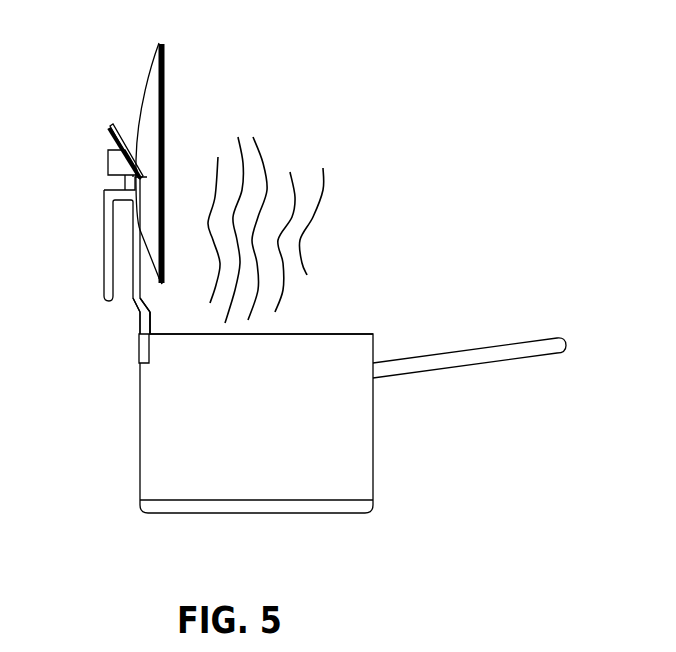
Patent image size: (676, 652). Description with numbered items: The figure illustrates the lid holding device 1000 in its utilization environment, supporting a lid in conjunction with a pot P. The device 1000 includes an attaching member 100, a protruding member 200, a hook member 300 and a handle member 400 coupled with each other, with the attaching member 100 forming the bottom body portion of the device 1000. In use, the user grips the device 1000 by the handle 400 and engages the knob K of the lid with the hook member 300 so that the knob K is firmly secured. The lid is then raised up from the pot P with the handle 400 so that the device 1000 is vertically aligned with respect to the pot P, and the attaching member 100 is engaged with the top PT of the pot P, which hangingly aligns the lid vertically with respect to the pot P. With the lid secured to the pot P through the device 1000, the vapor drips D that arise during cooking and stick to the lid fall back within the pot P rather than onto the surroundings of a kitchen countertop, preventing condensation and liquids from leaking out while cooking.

The hook member 300 is at (107, 121).
The knob K is at (104, 162).
The handle member 400 is at (102, 252).
The protruding member 200 is at (125, 308).
The lid holding device 1000 is at (130, 320).
The attaching member 100 is at (132, 358).
The vapor drips D is at (165, 296).
The pot P is at (378, 473).
The top of the pot PT is at (351, 323).